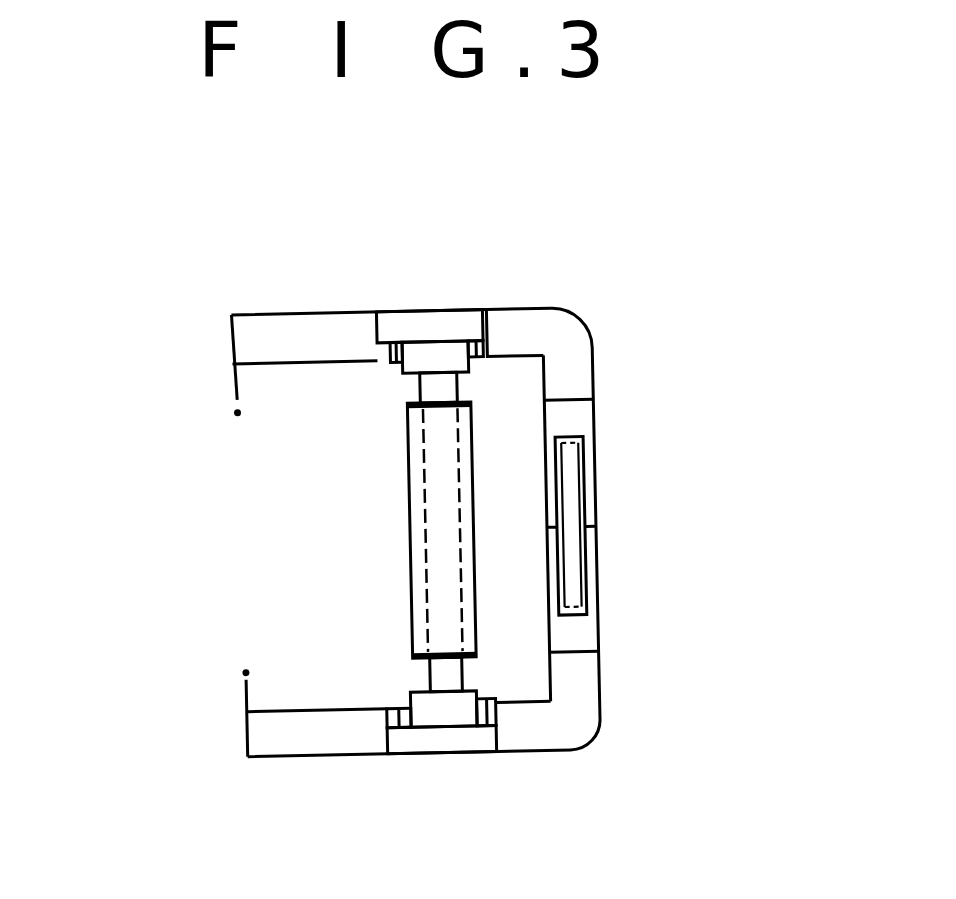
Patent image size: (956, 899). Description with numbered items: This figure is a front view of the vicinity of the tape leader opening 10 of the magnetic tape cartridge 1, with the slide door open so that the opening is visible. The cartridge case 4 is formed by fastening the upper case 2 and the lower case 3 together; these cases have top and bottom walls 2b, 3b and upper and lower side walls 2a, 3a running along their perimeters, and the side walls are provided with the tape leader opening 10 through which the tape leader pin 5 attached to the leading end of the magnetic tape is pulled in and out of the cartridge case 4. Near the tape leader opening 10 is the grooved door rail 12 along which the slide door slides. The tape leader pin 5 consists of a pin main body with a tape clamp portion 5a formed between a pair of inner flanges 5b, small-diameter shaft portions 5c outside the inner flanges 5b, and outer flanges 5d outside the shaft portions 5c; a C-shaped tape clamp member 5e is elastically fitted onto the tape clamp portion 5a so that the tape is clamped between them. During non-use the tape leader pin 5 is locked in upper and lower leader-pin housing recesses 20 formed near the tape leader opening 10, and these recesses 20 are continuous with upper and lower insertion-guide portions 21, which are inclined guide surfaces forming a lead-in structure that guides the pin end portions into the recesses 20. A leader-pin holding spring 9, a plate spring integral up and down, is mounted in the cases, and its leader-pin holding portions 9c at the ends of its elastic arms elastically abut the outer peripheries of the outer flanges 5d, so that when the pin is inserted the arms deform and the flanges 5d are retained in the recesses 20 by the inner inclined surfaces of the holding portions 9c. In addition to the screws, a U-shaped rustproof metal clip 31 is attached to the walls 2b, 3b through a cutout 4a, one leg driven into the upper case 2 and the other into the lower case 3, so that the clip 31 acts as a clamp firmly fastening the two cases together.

The magnetic tape cartridge 1 is at (125, 247).
The upper case 2 is at (575, 312).
The upper side wall 2a is at (318, 318).
The top wall 2b is at (583, 427).
The lower case 3 is at (588, 730).
The lower side wall 3a is at (272, 745).
The bottom wall 3b is at (588, 583).
The cartridge case 4 is at (563, 290).
The cutout 4a is at (605, 505).
The tape leader pin 5 is at (400, 512).
The tape clamp portion 5a is at (405, 465).
The inner flanges 5b is at (470, 398).
The small-diameter shaft portions 5c is at (418, 392).
The outer flanges 5d is at (428, 357).
The tape clamp member 5e is at (410, 555).
The leader-pin holding spring 9 is at (543, 677).
The leader-pin holding portions 9c is at (475, 345).
The tape leader opening 10 is at (268, 385).
The grooved door rail 12 is at (387, 725).
The leader-pin housing recesses 20 is at (402, 367).
The insertion-guide portions 21 is at (446, 345).
The clip 31 is at (580, 548).